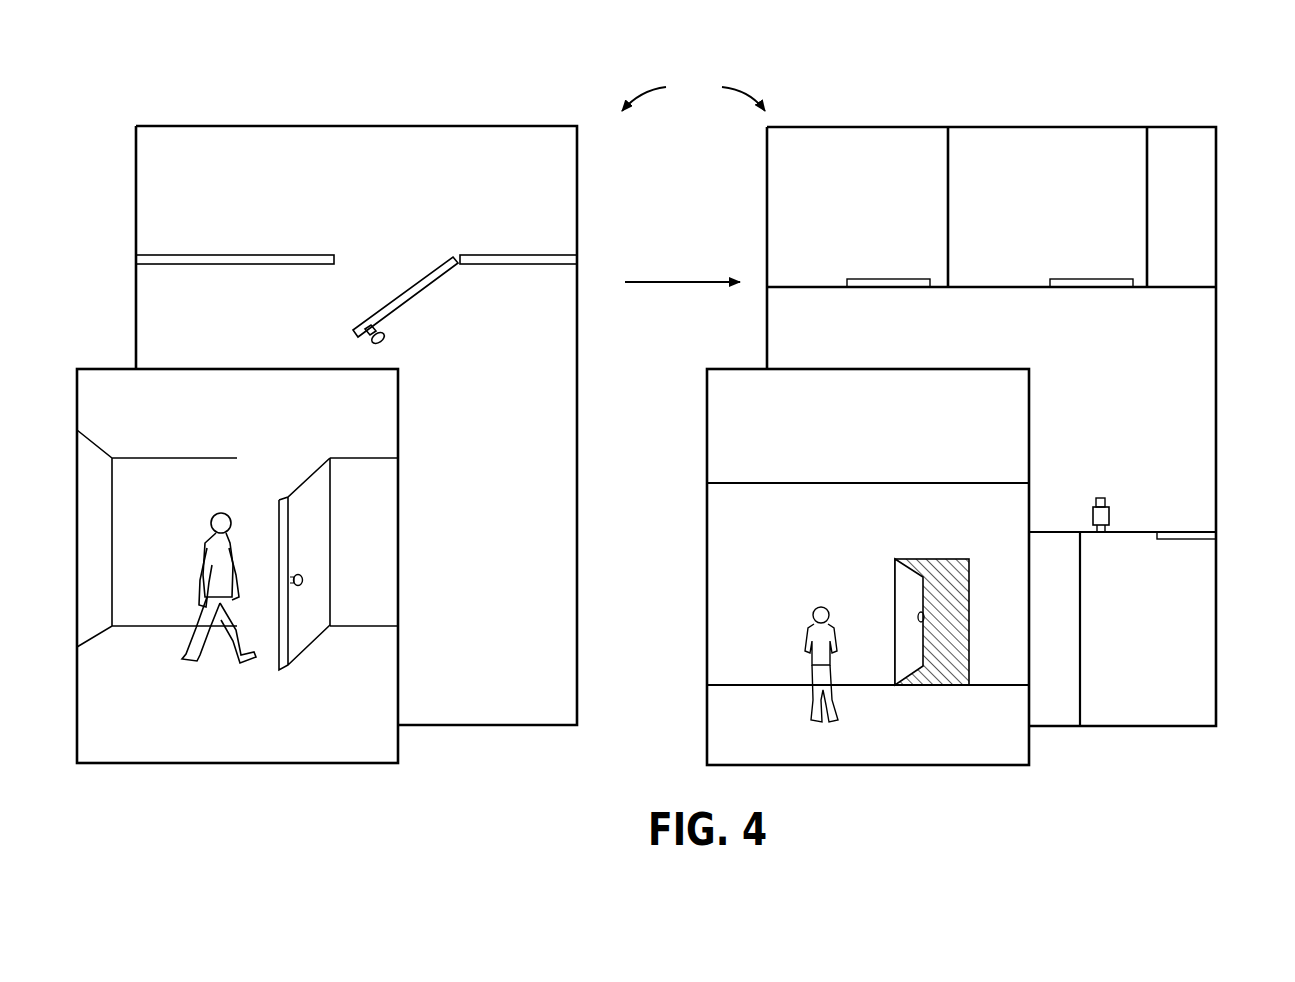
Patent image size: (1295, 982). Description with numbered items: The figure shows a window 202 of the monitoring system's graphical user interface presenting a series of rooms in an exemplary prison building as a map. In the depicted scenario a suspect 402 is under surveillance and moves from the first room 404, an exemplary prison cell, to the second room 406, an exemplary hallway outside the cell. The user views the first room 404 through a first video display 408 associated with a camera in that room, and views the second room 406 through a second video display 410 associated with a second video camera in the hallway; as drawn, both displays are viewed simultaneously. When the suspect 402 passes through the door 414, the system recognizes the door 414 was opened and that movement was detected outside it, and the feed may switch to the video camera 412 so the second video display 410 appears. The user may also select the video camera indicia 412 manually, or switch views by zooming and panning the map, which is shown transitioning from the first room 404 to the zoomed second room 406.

The window 202 is at (682, 177).
The suspect 402 is at (212, 505).
The first room 404 is at (322, 150).
The second room 406 is at (1200, 416).
The first video display 408 is at (105, 368).
The second video display 410 is at (707, 400).
The video camera indicia 412 is at (1112, 515).
The door 414 is at (310, 635).